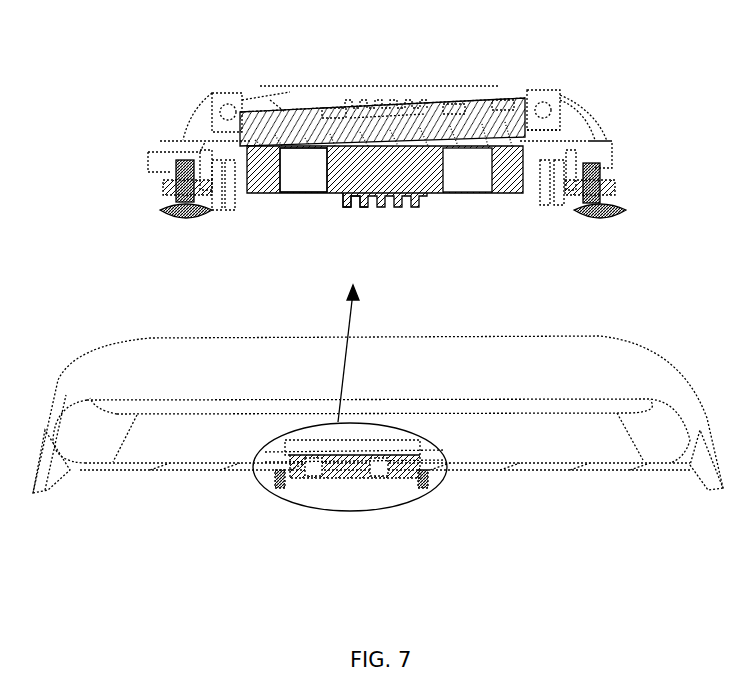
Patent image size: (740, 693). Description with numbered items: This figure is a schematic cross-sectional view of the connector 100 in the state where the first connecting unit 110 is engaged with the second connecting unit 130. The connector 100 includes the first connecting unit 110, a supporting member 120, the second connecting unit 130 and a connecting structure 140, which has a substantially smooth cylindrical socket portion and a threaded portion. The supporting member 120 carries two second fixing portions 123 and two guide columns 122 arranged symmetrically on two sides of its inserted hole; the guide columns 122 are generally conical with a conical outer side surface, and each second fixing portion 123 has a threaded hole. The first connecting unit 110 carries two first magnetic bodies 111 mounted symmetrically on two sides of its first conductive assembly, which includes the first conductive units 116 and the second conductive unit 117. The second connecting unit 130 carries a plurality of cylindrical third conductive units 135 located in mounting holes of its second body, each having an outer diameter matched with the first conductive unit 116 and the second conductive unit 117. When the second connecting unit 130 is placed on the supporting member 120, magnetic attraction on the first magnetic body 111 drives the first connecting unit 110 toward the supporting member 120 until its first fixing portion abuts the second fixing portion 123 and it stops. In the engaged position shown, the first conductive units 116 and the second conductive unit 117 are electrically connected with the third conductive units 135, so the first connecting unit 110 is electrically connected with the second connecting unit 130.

The connector 100 is at (126, 100).
The first connecting unit 110 is at (503, 190).
The first magnetic body 111 is at (303, 170).
The first conductive unit 116 is at (348, 205).
The second conductive unit 117 is at (392, 210).
The supporting member 120 is at (178, 155).
The guide column 122 is at (225, 210).
The second fixing portion 123 is at (163, 188).
The second connecting unit 130 is at (515, 115).
The third conductive unit 135 is at (428, 102).
The connecting structure 140 is at (173, 218).